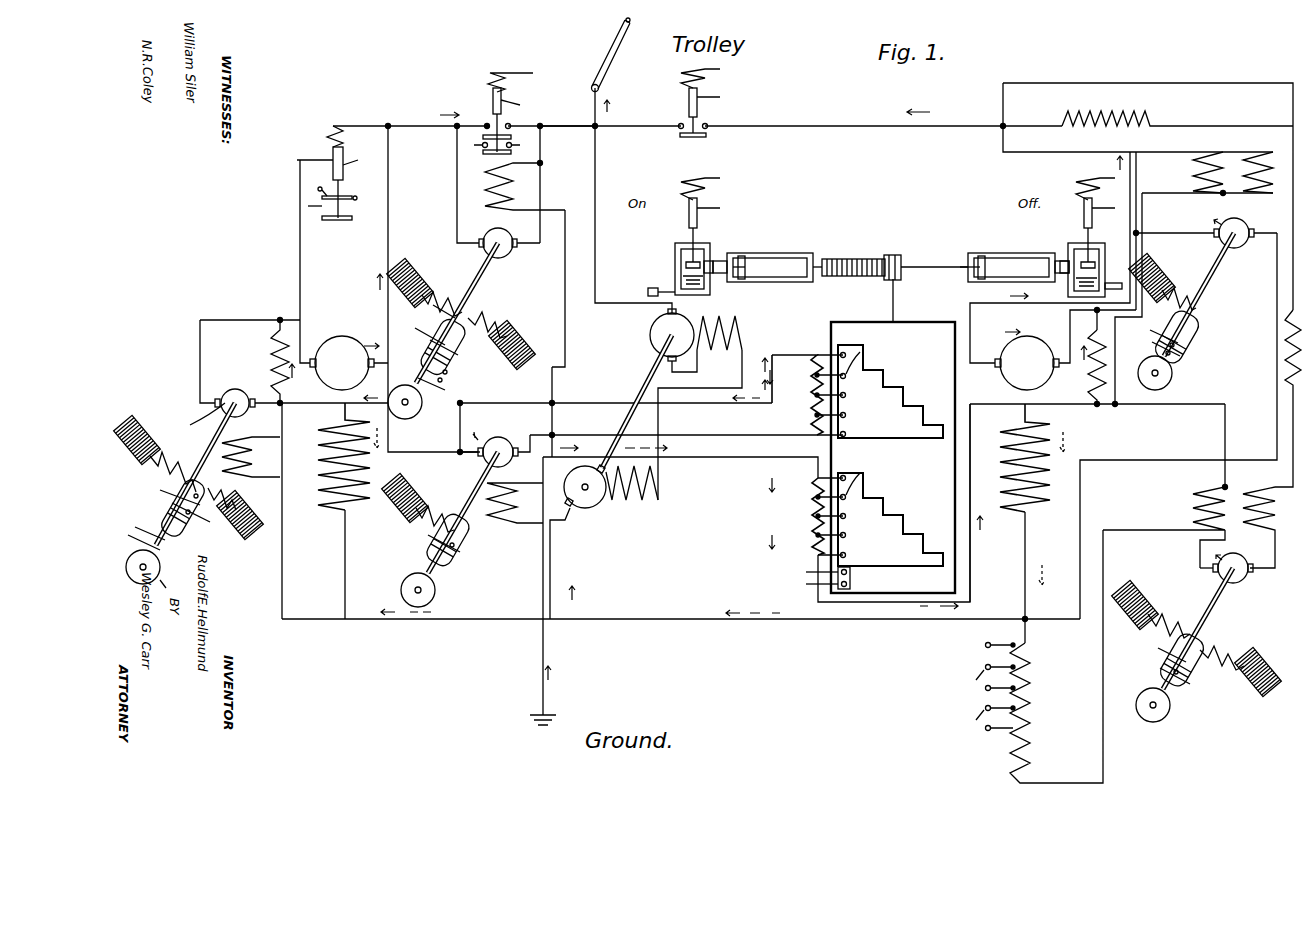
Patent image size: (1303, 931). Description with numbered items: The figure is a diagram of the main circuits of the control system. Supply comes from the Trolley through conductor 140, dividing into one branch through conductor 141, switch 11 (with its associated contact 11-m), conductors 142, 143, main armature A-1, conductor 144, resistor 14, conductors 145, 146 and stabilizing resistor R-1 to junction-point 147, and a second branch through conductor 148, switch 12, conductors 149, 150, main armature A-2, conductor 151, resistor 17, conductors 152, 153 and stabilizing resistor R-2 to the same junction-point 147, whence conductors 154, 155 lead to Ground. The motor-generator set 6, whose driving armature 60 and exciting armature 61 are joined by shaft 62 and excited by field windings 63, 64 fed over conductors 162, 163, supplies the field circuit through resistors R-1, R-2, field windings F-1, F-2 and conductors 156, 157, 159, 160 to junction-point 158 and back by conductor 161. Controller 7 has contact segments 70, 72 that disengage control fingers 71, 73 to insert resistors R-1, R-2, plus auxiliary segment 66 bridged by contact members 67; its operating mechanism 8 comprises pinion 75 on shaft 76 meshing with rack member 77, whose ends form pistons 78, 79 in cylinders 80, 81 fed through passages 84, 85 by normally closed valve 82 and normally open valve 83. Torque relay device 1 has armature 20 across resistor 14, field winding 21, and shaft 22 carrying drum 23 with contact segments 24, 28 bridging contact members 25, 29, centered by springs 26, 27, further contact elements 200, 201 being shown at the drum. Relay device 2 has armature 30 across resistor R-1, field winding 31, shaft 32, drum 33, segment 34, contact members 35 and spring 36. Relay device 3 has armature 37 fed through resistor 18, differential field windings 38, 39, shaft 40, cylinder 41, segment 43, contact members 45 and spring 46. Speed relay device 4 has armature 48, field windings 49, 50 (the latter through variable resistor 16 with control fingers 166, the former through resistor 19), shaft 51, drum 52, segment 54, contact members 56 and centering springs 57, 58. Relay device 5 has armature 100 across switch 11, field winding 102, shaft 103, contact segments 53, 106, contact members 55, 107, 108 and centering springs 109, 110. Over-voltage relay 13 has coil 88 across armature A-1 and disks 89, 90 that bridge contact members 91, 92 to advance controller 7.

The torque-relay device 1 is at (190, 427).
The torque relay device 2 is at (467, 474).
The torque-relay device 3 is at (1212, 262).
The speed relay device 4 is at (1206, 590).
The torque-relay device 5 is at (462, 282).
The motor-generator set 6 is at (648, 356).
The controller 7 is at (917, 322).
The operating mechanism 8 is at (868, 260).
The main-circuit switch 11 is at (513, 112).
The interlock contact of contactor 11 11-m is at (511, 148).
The main-circuit switch 12 is at (698, 110).
The over-voltage relay 13 is at (334, 182).
The main-circuit resistor 14 is at (272, 344).
The variable resistor 16 is at (1026, 694).
The main-circuit resistor 17 is at (1090, 378).
The resistor 18 is at (1132, 118).
The resistor 19 is at (1286, 330).
The commutator-type armature 20 is at (253, 394).
The field winding 21 is at (247, 430).
The shaft 22 is at (200, 453).
The small drum 23 is at (131, 574).
The contact segment 24 is at (185, 519).
The stationary contact members 25 is at (188, 528).
The spring 26 is at (232, 482).
The spring 27 is at (155, 453).
The second contact segment 28 is at (141, 535).
The stationary contact members 29 is at (168, 567).
The commutator-type armature 30 is at (494, 436).
The field winding 31 is at (507, 482).
The relay shaft 32 is at (470, 504).
The small drum 33 is at (402, 585).
The contact segment 34 is at (452, 567).
The stationary contact members 35 is at (464, 549).
The spring 36 is at (418, 503).
The commutator-type armature 37 is at (1262, 220).
The field winding 38 is at (1189, 184).
The field winding 39 is at (1270, 156).
The relay shaft 40 is at (1212, 275).
The small cylinder 41 is at (1147, 384).
The contact segment 43 is at (1148, 346).
The stationary contact members 45 is at (1182, 354).
The spring 46 is at (1162, 281).
The commutator-type armature 48 is at (1232, 558).
The field winding 49 is at (1249, 492).
The second field winding 50 is at (1195, 513).
The relay shaft 51 is at (1218, 595).
The small drum 52 is at (1143, 720).
The contact segment 53 is at (400, 380).
The contact segment 54 is at (1148, 684).
The stationary contact members 55 is at (441, 381).
The stationary contact members 56 is at (1182, 688).
The centering spring 57 is at (1190, 616).
The centering spring 58 is at (1228, 648).
The driving armature 60 is at (676, 326).
The exciting armature 61 is at (576, 512).
The shaft 62 is at (638, 391).
The field winding 63 is at (742, 338).
The field winding 64 is at (662, 496).
The auxiliary contact segment 66 is at (854, 584).
The stationary contact members 67 is at (854, 575).
The contact segment 70 is at (896, 376).
The control fingers 71 is at (861, 356).
The contact segment 72 is at (896, 499).
The control fingers 73 is at (859, 479).
The pinion 75 is at (914, 262).
The shaft 76 is at (898, 304).
The rack member 77 is at (857, 258).
The piston 78 is at (744, 256).
The piston 79 is at (993, 264).
The operating cylinder 80 is at (794, 254).
The operating cylinder 81 is at (1044, 260).
The valve 82 is at (675, 278).
The valve 83 is at (1100, 270).
The pipe 84 is at (655, 289).
The pipe 85 is at (1115, 279).
The actuating coil 88 is at (329, 141).
The movable disk 89 is at (350, 195).
The movable disk 90 is at (352, 221).
The stationary contact members 91 is at (316, 182).
The stationary contact members 92 is at (319, 206).
The commutator-type armature 100 is at (488, 234).
The field winding 102 is at (486, 206).
The relay device shaft 103 is at (488, 284).
The contact segment 106 is at (465, 342).
The stationary contact members 107 is at (459, 351).
The stationary contact members 108 is at (456, 366).
The centering spring 109 is at (424, 287).
The centering spring 110 is at (480, 316).
The conductor 140 is at (597, 72).
The conductor 141 is at (588, 128).
The conductor 142 is at (433, 126).
The conductor 143 is at (388, 228).
The conductor 144 is at (312, 338).
The conductor 145 is at (330, 389).
The conductor 146 is at (535, 388).
The junction-point 147 is at (819, 453).
The conductor 148 is at (660, 116).
The conductor 149 is at (877, 126).
The conductor 150 is at (1056, 150).
The conductor 151 is at (1068, 328).
The conductor 152 is at (1070, 404).
The conductor 153 is at (977, 582).
The conductor 154 is at (740, 445).
The conductor 155 is at (537, 591).
The conductor 156 is at (340, 576).
The conductor 157 is at (456, 624).
The junction-point 158 is at (557, 624).
The conductor 159 is at (1027, 562).
The conductor 160 is at (898, 624).
The conductor 161 is at (564, 570).
The conductor 162 is at (599, 176).
The conductor 163 is at (726, 388).
The stationary control fingers 166 is at (965, 708).
The brush 200 is at (235, 514).
The contact segment 201 is at (160, 489).
The main armature A-1 is at (344, 275).
The main armature A-2 is at (1053, 271).
The main field winding F-1 is at (349, 456).
The main field winding F-2 is at (1033, 458).
The stabilizing resistor R-1 is at (802, 395).
The stabilizing resistor R-2 is at (806, 516).